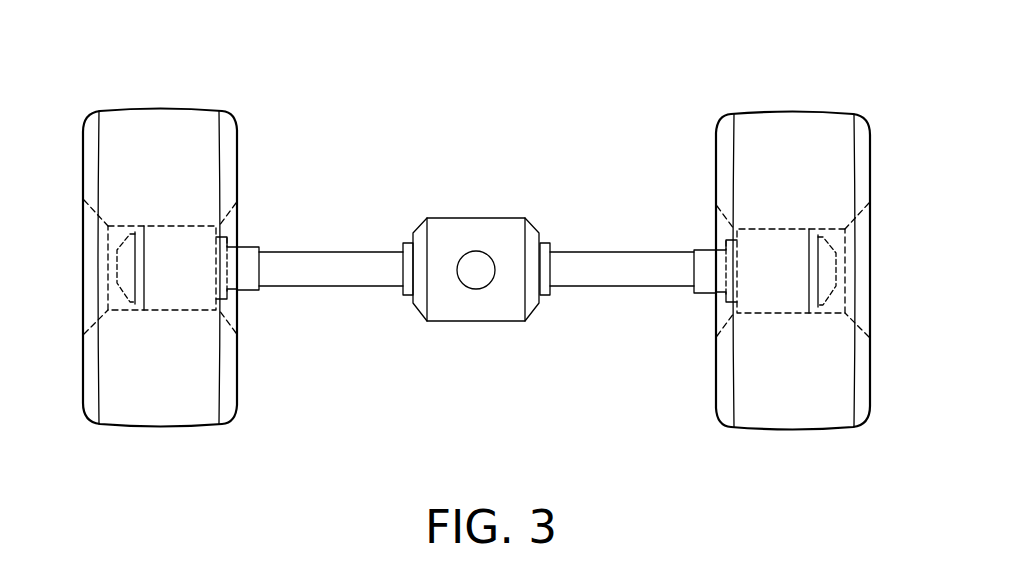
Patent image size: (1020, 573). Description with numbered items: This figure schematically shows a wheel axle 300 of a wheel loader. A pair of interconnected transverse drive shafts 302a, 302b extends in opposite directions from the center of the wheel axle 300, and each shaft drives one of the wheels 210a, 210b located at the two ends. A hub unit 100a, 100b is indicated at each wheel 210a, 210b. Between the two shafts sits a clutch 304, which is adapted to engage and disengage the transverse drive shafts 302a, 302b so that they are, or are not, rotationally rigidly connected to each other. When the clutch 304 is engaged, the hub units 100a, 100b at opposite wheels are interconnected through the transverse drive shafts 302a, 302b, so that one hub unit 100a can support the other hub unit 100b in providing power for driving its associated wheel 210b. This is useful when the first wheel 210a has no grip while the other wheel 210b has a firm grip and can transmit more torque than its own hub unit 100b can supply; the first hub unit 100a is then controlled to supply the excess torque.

The wheel axle 300 is at (660, 92).
The first hub unit 100a is at (177, 226).
The second hub unit 100b is at (767, 229).
The first wheel 210a is at (153, 410).
The second wheel 210b is at (797, 413).
The first transverse drive shaft 302a is at (330, 268).
The second transverse drive shaft 302b is at (620, 268).
The clutch 304 is at (477, 235).